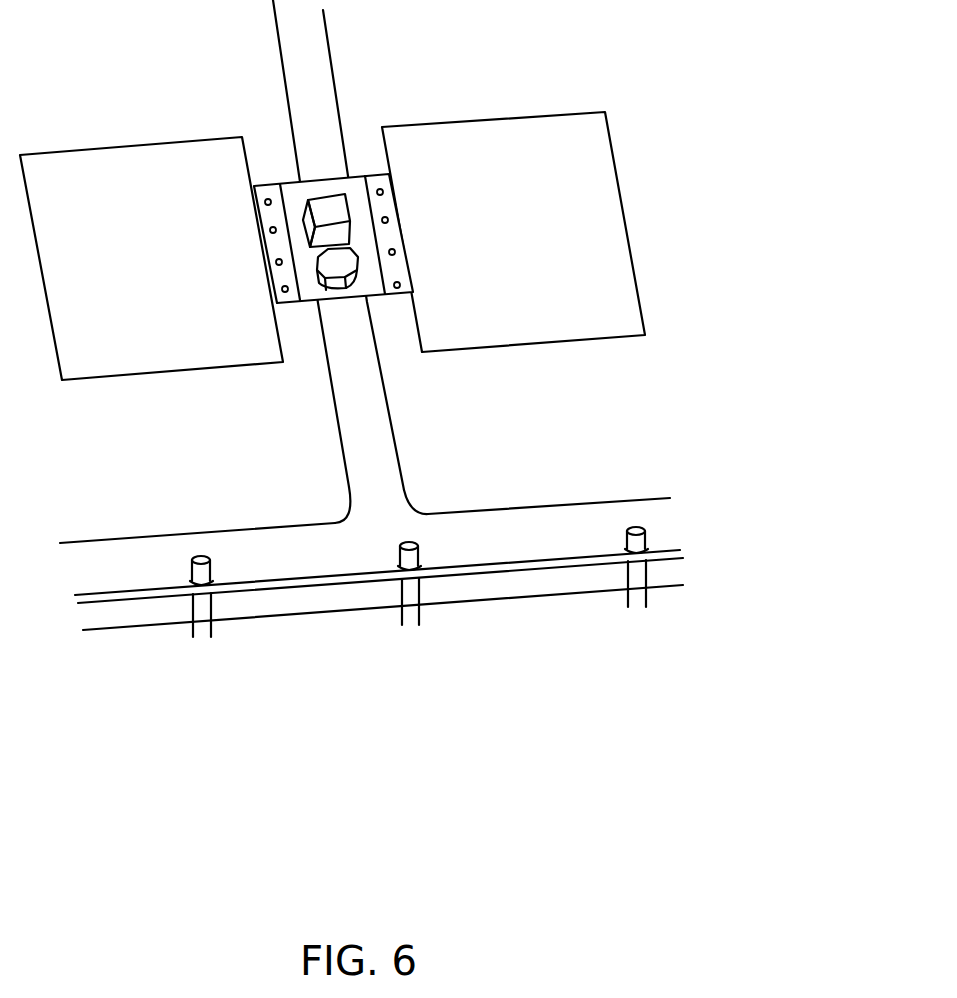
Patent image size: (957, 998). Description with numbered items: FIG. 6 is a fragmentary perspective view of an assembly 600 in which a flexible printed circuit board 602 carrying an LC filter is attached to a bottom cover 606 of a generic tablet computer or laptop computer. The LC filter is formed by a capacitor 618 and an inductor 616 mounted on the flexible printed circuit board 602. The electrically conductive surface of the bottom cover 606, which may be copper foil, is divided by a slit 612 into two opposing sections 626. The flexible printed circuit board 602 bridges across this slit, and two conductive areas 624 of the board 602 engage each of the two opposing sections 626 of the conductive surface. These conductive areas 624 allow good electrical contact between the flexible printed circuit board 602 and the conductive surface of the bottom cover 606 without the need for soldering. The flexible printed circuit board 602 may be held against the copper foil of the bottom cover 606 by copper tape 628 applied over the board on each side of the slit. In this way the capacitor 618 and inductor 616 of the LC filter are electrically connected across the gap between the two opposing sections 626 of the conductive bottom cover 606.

The solar panel mounting assembly 600 is at (380, 930).
The flexible printed circuit board 602 is at (292, 195).
The bottom cover 606 is at (218, 506).
The post 612 is at (375, 421).
The inductor 616 is at (340, 264).
The capacitor 618 is at (332, 208).
The conductive areas 624 is at (290, 303).
The opposing sections 626 is at (167, 453).
The copper tape 628 is at (182, 281).